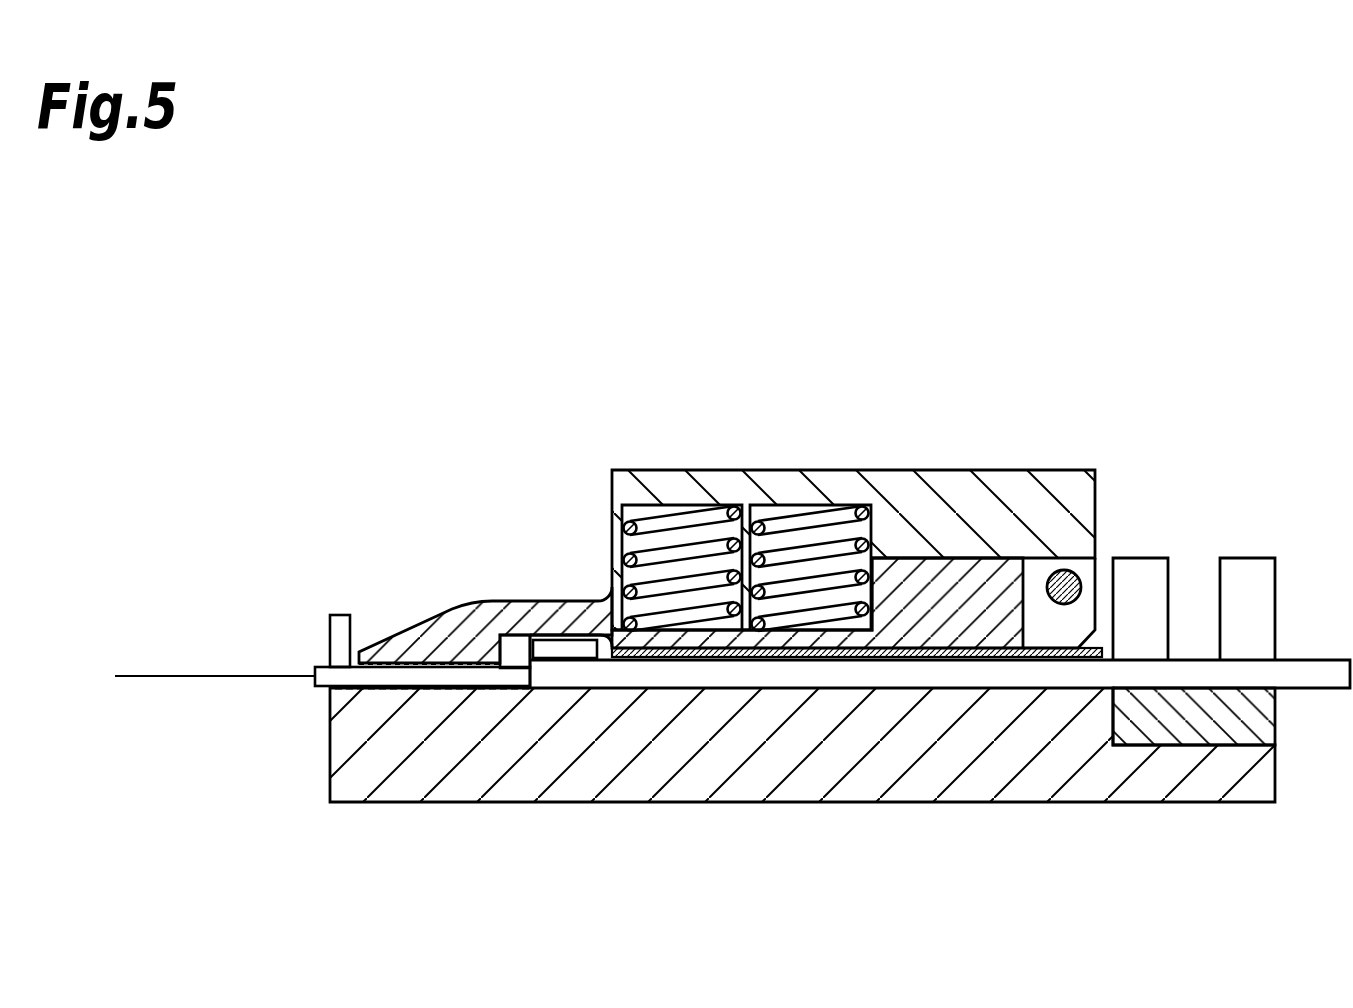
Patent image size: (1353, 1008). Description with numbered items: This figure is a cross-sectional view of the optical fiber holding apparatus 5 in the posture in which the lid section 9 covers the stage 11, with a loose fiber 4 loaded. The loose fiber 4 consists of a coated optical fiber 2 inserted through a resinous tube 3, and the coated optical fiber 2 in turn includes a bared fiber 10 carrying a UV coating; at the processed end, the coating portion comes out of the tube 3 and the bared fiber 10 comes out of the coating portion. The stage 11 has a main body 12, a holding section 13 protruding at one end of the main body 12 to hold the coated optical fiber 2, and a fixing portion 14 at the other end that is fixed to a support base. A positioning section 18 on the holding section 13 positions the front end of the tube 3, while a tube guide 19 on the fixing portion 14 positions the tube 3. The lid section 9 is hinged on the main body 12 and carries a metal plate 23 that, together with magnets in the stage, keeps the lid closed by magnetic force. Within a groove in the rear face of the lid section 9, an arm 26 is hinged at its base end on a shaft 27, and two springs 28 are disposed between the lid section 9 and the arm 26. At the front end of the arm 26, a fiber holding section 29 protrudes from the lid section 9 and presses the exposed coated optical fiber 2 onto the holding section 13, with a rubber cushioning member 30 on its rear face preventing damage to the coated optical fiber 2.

The optical fiber holding apparatus 5 is at (1255, 267).
The lid section 9 is at (623, 468).
The bared fiber 10 is at (178, 672).
The coated optical fiber 2 is at (340, 672).
The tube 3 is at (558, 675).
The loose fiber 4 is at (145, 452).
The fiber holding section 29 is at (535, 605).
The positioning section 18 is at (578, 647).
The springs 28 is at (817, 520).
The metal plate 23 is at (903, 650).
The arm 26 is at (980, 557).
The shaft 27 is at (1067, 568).
The tube guide 19 is at (1247, 578).
The cushioning member 30 is at (397, 686).
The stage 11 is at (327, 780).
The main body 12 is at (615, 812).
The holding section 13 is at (333, 812).
The fixing portion 14 is at (1275, 812).